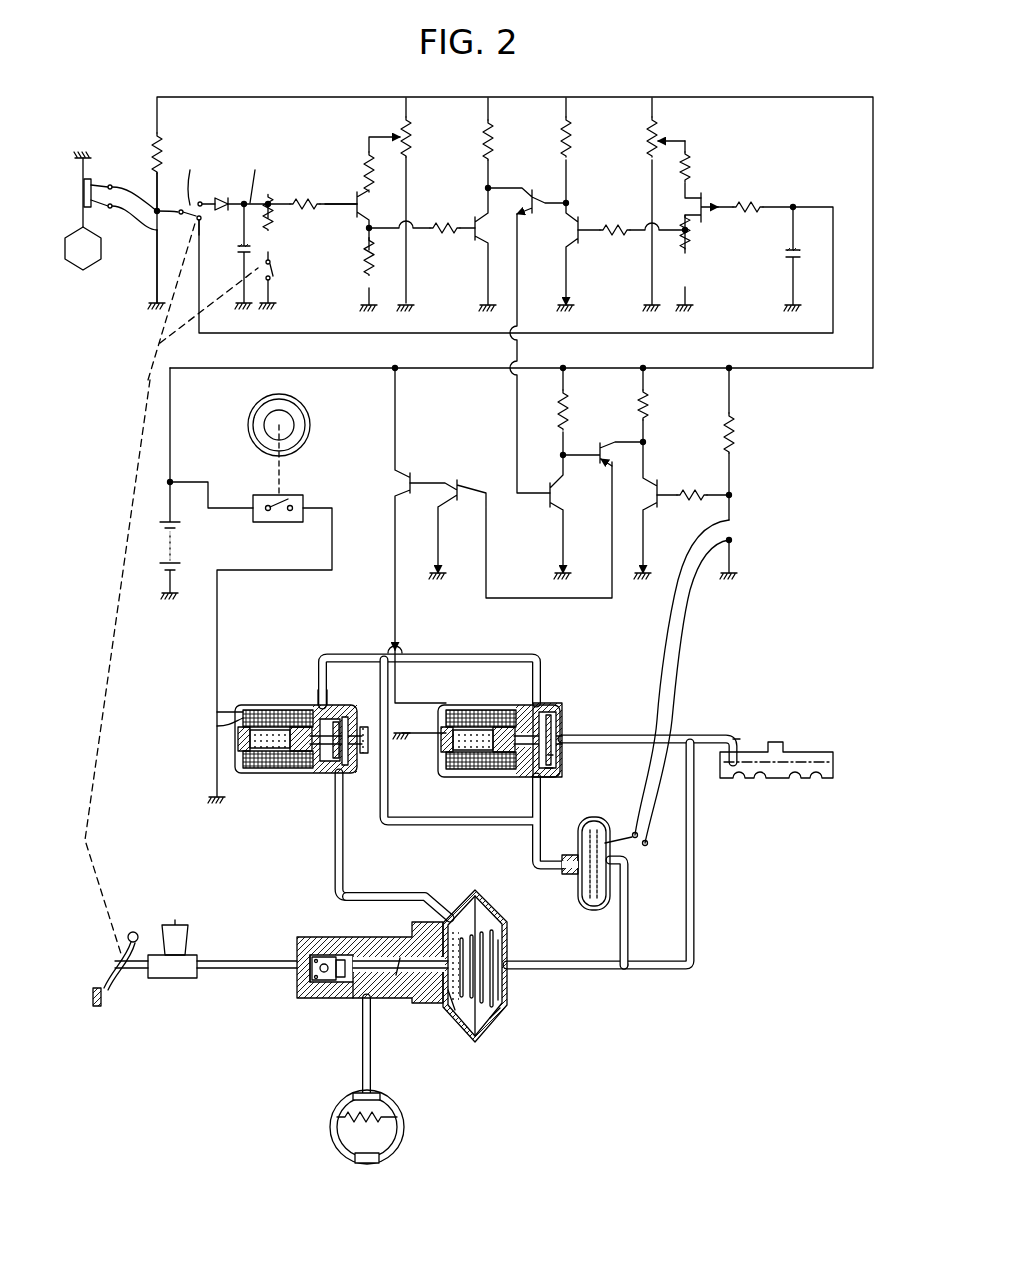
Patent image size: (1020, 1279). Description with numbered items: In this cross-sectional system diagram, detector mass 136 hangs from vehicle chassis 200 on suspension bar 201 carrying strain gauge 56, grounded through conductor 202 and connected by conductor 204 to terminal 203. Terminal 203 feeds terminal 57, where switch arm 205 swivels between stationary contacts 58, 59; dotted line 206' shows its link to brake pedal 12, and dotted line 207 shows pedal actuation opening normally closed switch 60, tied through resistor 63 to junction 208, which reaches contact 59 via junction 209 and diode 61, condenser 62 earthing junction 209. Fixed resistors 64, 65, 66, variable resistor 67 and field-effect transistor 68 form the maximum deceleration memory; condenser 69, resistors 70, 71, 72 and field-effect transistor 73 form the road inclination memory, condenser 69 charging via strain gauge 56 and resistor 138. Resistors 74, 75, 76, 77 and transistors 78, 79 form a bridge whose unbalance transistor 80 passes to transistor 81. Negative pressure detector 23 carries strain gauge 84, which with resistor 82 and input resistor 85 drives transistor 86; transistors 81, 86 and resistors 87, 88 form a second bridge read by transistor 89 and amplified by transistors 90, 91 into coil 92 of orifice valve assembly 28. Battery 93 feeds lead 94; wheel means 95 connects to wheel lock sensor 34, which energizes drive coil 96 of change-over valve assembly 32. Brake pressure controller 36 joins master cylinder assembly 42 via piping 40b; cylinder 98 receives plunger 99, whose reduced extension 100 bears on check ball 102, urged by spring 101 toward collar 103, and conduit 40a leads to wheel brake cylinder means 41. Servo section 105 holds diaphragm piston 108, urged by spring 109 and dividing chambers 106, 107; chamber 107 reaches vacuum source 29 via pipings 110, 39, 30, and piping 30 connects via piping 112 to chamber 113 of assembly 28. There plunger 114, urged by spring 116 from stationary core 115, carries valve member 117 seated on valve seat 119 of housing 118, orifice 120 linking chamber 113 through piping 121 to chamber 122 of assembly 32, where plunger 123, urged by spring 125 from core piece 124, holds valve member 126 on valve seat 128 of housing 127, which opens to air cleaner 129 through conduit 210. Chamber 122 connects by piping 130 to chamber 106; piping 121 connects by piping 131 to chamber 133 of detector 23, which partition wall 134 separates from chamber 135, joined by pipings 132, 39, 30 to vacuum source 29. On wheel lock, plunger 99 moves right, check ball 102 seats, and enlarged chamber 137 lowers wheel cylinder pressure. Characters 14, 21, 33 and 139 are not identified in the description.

The brake pedal 12 is at (112, 970).
The wheel speed signal feedback circuit 14 is at (665, 338).
The control signal line 21 is at (520, 280).
The pressure-responsive diaphragm switch 23 is at (638, 725).
The second solenoid valve 28 is at (504, 739).
The intake manifold 29 is at (755, 778).
The vacuum line 30 is at (718, 736).
The first solenoid valve 32 is at (279, 732).
The ignition circuit wiring 33 is at (272, 570).
The ignition switch 34 is at (300, 490).
The brake booster 36 is at (490, 981).
The vacuum conduit 39 is at (697, 880).
The hydraulic line to wheel cylinder 40a is at (362, 1065).
The pedal push rod 40b is at (240, 968).
The wheel brake cylinder 41 is at (380, 1095).
The pedal linkage block 42 is at (175, 978).
The contact plate 56 is at (84, 197).
The movable contact 57 is at (180, 213).
The fixed contact 58 is at (204, 228).
The fixed contact 59 is at (203, 202).
The switch 60 is at (276, 270).
The diode 61 is at (230, 192).
The capacitor 62 is at (237, 252).
The resistor 63 is at (276, 235).
The base lead 64 is at (334, 208).
The resistor 65 is at (360, 282).
The resistor 66 is at (368, 160).
The potentiometer 67 is at (410, 138).
The transistor 68 is at (352, 198).
The capacitor 69 is at (785, 255).
The resistor 70 is at (755, 210).
The resistor 71 is at (692, 172).
The resistor 72 is at (692, 275).
The transistor 73 is at (708, 196).
The resistor 74 is at (450, 230).
The resistor 75 is at (482, 140).
The resistor 76 is at (570, 135).
The resistor 77 is at (615, 233).
The transistor 78 is at (470, 220).
The transistor 79 is at (583, 222).
The transistor 80 is at (530, 188).
The transistor 81 is at (547, 503).
The resistor 82 is at (738, 433).
The switch lead 84 is at (615, 865).
The resistor 85 is at (692, 498).
The transistor 86 is at (662, 480).
The resistor 87 is at (570, 410).
The resistor 88 is at (650, 405).
The transistor 89 is at (597, 462).
The transistor 90 is at (460, 478).
The transistor 91 is at (413, 468).
The solenoid coil 92 is at (495, 712).
The battery 93 is at (155, 555).
The power supply line 94 is at (172, 425).
The horn / warning device 95 is at (312, 425).
The solenoid coil 96 is at (262, 708).
The push rod 98 is at (365, 950).
The piston rod 99 is at (395, 939).
The master cylinder body 100 is at (353, 967).
The piston 101 is at (310, 985).
The return spring 102 is at (315, 950).
The piston seal 103 is at (343, 985).
The diaphragm plates 105 is at (506, 990).
The booster housing wall 106 is at (452, 1010).
The booster housing wall 107 is at (490, 1012).
The booster partition 108 is at (480, 903).
The diaphragm 109 is at (508, 947).
The vacuum conduit 110 is at (620, 970).
The vacuum conduit 112 is at (622, 730).
The valve end wall 113 is at (530, 778).
The valve core 114 is at (495, 778).
The valve end wall 115 is at (440, 745).
The solenoid coil 116 is at (458, 778).
The valve housing 117 is at (553, 708).
The valve plate 118 is at (556, 717).
The valve seat 119 is at (560, 760).
The valve port 120 is at (556, 775).
The conduit 121 is at (355, 655).
The valve plate 122 is at (335, 765).
The armature 123 is at (300, 760).
The coil leads 124 is at (235, 738).
The solenoid coil 125 is at (262, 775).
The valve port 126 is at (322, 700).
The valve end wall 127 is at (328, 705).
The conduit 128 is at (345, 790).
The valve plate 129 is at (350, 715).
The conduit 130 is at (384, 893).
The conduit 131 is at (485, 826).
The conduit 132 is at (626, 912).
The switch port 133 is at (580, 870).
The diaphragm 134 is at (590, 895).
The contact 135 is at (598, 898).
The wheel rotation sensor 136 is at (82, 255).
The seal 137 is at (372, 990).
The resistor 138 is at (155, 130).
The potentiometer 139 is at (660, 138).
The ground 200 is at (88, 150).
The sensor shaft 201 is at (80, 179).
The ground lead 202 is at (153, 265).
The lead 203 is at (160, 200).
The leads 204 is at (134, 196).
The lead 205 is at (204, 173).
The mechanical linkage 206' is at (112, 668).
The mechanical linkage 207 is at (168, 340).
The resistor 208 is at (288, 200).
The lead 209 is at (259, 172).
The valve seat 210 is at (365, 755).